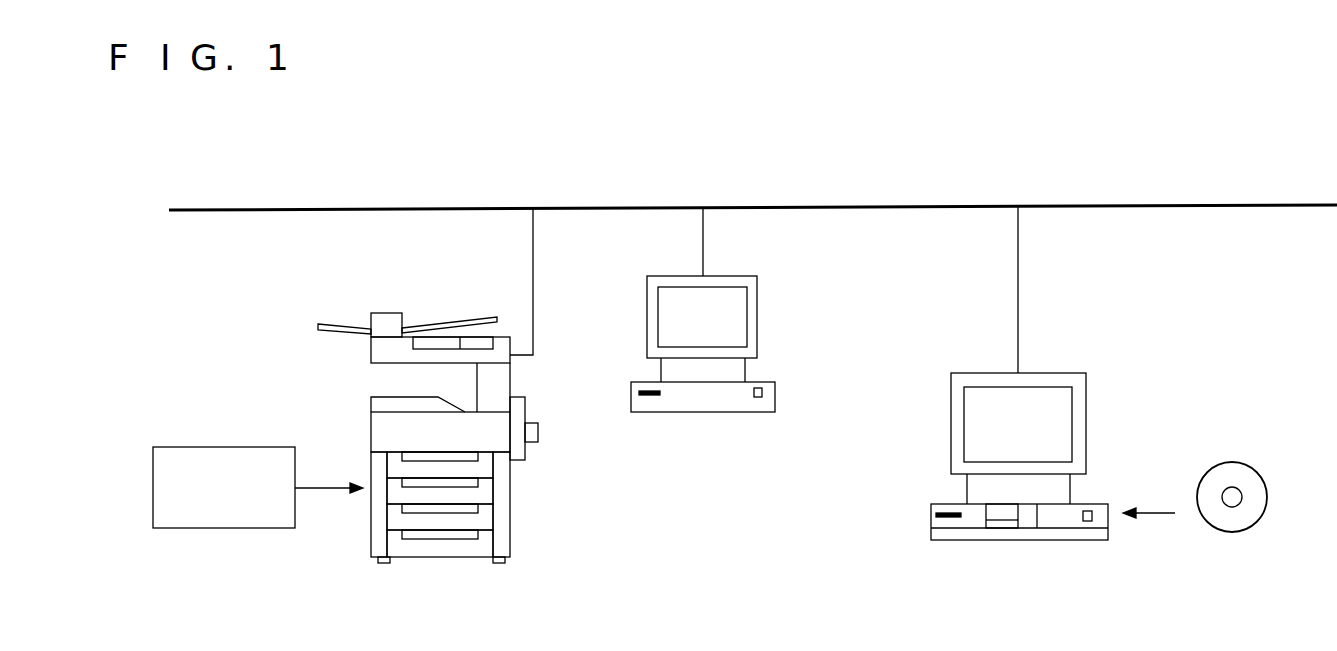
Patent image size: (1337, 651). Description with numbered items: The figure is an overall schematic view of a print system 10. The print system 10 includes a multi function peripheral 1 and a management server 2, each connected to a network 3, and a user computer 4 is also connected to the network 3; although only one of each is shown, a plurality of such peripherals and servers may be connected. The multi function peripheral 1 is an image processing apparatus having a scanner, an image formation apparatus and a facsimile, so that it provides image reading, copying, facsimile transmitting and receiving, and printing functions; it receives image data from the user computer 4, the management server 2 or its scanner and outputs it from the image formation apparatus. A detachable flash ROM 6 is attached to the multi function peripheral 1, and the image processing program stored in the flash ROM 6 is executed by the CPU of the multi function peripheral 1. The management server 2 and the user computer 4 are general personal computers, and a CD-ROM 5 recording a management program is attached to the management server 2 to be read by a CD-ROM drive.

The multi function peripheral 1 is at (388, 313).
The management server 2 is at (1050, 373).
The network 3 is at (955, 208).
The user computer 4 is at (758, 313).
The CD-ROM 5 is at (1242, 462).
The flash ROM 6 is at (243, 447).
The print system 10 is at (786, 126).